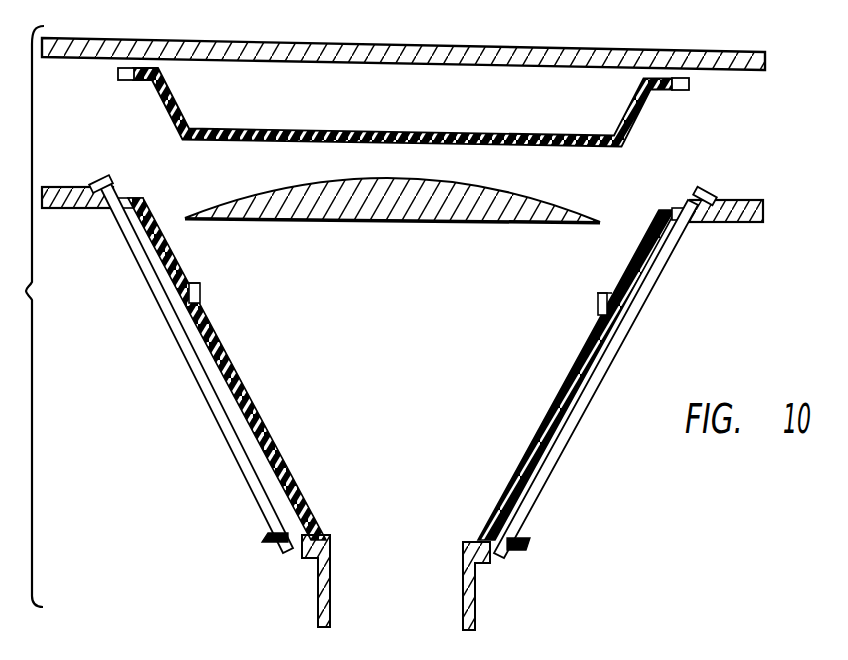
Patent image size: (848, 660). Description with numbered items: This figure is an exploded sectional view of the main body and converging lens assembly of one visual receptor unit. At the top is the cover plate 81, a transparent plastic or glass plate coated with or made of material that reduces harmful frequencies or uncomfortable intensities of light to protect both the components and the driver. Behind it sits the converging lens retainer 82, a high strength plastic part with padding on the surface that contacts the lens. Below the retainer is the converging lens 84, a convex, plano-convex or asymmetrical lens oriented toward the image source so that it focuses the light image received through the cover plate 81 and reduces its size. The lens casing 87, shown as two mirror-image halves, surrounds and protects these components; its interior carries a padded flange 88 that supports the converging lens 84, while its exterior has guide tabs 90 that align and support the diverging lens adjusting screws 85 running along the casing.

The cover plate 81 is at (590, 49).
The converging lens retainer 82 is at (515, 134).
The converging lens 84 is at (558, 206).
The diverging lens adjusting screws 85 is at (197, 386).
The lens casing 87 is at (261, 419).
The padded flange 88 is at (200, 295).
The guide tabs 90 is at (262, 539).